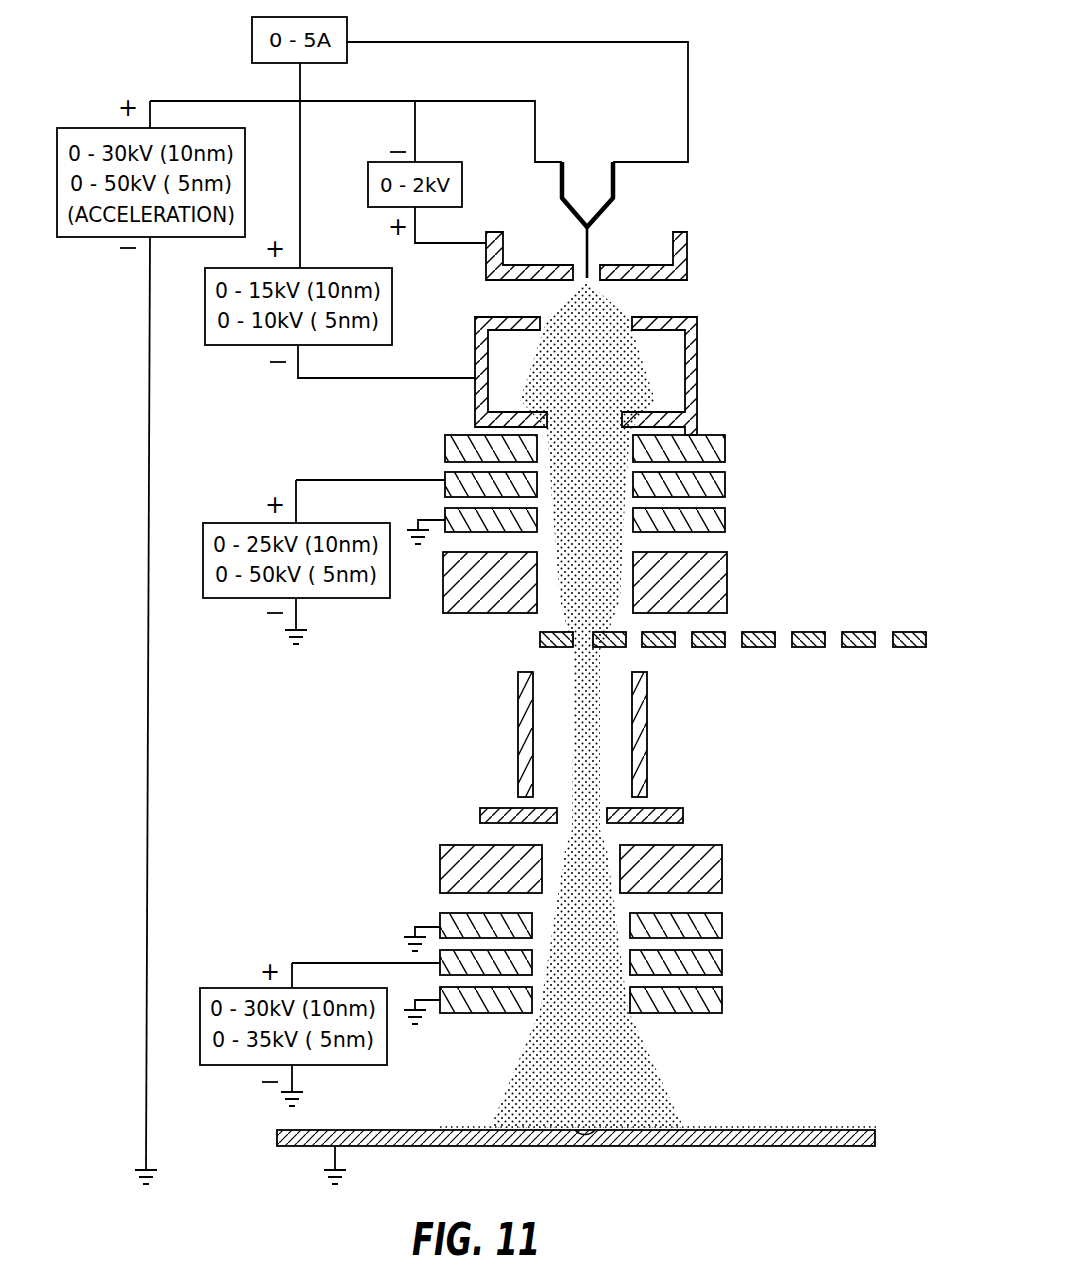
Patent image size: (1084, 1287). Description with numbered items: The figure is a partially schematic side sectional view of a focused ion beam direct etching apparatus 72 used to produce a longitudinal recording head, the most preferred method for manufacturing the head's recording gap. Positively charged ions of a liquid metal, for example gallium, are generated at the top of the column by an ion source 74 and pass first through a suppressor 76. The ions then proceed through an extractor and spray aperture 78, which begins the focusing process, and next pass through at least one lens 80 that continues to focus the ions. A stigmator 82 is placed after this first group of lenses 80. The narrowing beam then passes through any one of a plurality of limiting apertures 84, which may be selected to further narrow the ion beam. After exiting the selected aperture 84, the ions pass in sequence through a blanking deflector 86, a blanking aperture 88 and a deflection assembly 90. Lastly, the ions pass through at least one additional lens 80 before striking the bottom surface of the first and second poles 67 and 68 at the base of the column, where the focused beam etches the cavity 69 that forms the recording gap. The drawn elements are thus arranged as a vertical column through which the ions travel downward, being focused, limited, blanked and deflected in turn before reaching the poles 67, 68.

The focused ion beam direct etching apparatus 72 is at (727, 78).
The ion source 74 is at (572, 167).
The suppressor 76 is at (687, 262).
The extractor and spray aperture 78 is at (697, 368).
The lens 80 is at (725, 448).
The stigmator 82 is at (727, 585).
The limiting aperture 84 is at (583, 645).
The blanking deflector 86 is at (647, 733).
The blanking aperture 88 is at (683, 815).
The deflection assembly 90 is at (722, 865).
The first pole 67 is at (460, 1126).
The second pole 68 is at (780, 1128).
The cavity 69 is at (585, 1130).